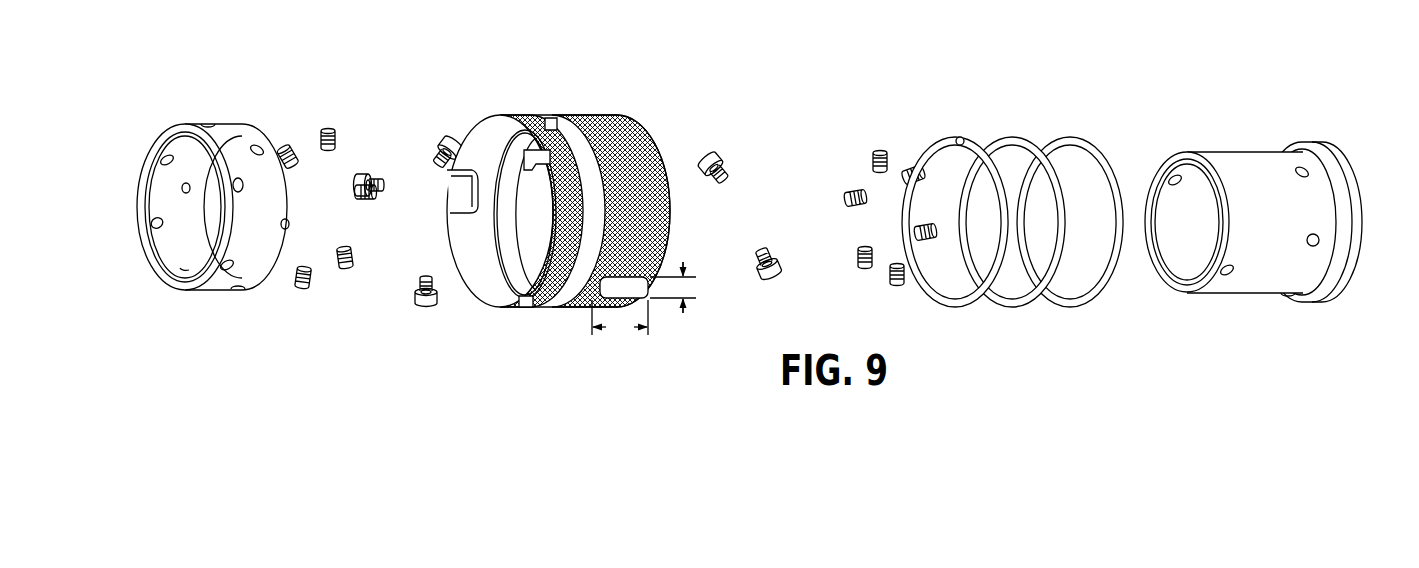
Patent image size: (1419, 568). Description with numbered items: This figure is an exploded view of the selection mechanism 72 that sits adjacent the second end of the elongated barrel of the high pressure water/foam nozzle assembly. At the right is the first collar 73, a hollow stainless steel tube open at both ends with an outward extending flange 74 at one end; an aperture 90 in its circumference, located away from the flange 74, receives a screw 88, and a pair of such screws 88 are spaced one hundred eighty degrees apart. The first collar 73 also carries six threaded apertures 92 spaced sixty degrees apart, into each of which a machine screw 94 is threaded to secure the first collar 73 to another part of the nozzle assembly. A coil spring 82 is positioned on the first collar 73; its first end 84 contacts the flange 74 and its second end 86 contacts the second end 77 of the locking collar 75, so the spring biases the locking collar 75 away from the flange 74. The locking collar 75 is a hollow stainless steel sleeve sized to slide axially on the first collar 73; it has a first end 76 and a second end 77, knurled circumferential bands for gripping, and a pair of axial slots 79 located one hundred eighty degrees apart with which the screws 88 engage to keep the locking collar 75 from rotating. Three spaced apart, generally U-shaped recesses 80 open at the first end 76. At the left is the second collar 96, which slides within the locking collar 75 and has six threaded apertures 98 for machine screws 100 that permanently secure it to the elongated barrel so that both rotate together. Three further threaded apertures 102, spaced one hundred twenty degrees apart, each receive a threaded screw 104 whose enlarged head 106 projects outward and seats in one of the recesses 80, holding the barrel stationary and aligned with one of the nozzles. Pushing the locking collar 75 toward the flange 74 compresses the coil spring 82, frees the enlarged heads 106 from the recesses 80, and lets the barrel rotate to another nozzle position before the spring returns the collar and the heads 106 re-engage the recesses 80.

The selection mechanism 72 is at (1270, 66).
The first collar 73 is at (1253, 200).
The outward extending flange 74 is at (1321, 146).
The locking collar 75 is at (562, 215).
The first end 76 is at (568, 173).
The second end 77 is at (668, 175).
The axial slot 79 is at (536, 166).
The recess 80 is at (548, 127).
The coil spring 82 is at (1012, 203).
The first end 84 is at (1049, 275).
The second end 86 is at (936, 142).
The screw 88 is at (719, 153).
The aperture 90 is at (1176, 176).
The threaded aperture 92 is at (1318, 238).
The machine screw 94 is at (851, 189).
The second collar 96 is at (236, 119).
The threaded aperture 98 is at (236, 180).
The machine screw 100 is at (293, 147).
The threaded aperture 102 is at (260, 147).
The threaded screw 104 is at (436, 136).
The enlarged head 106 is at (455, 130).